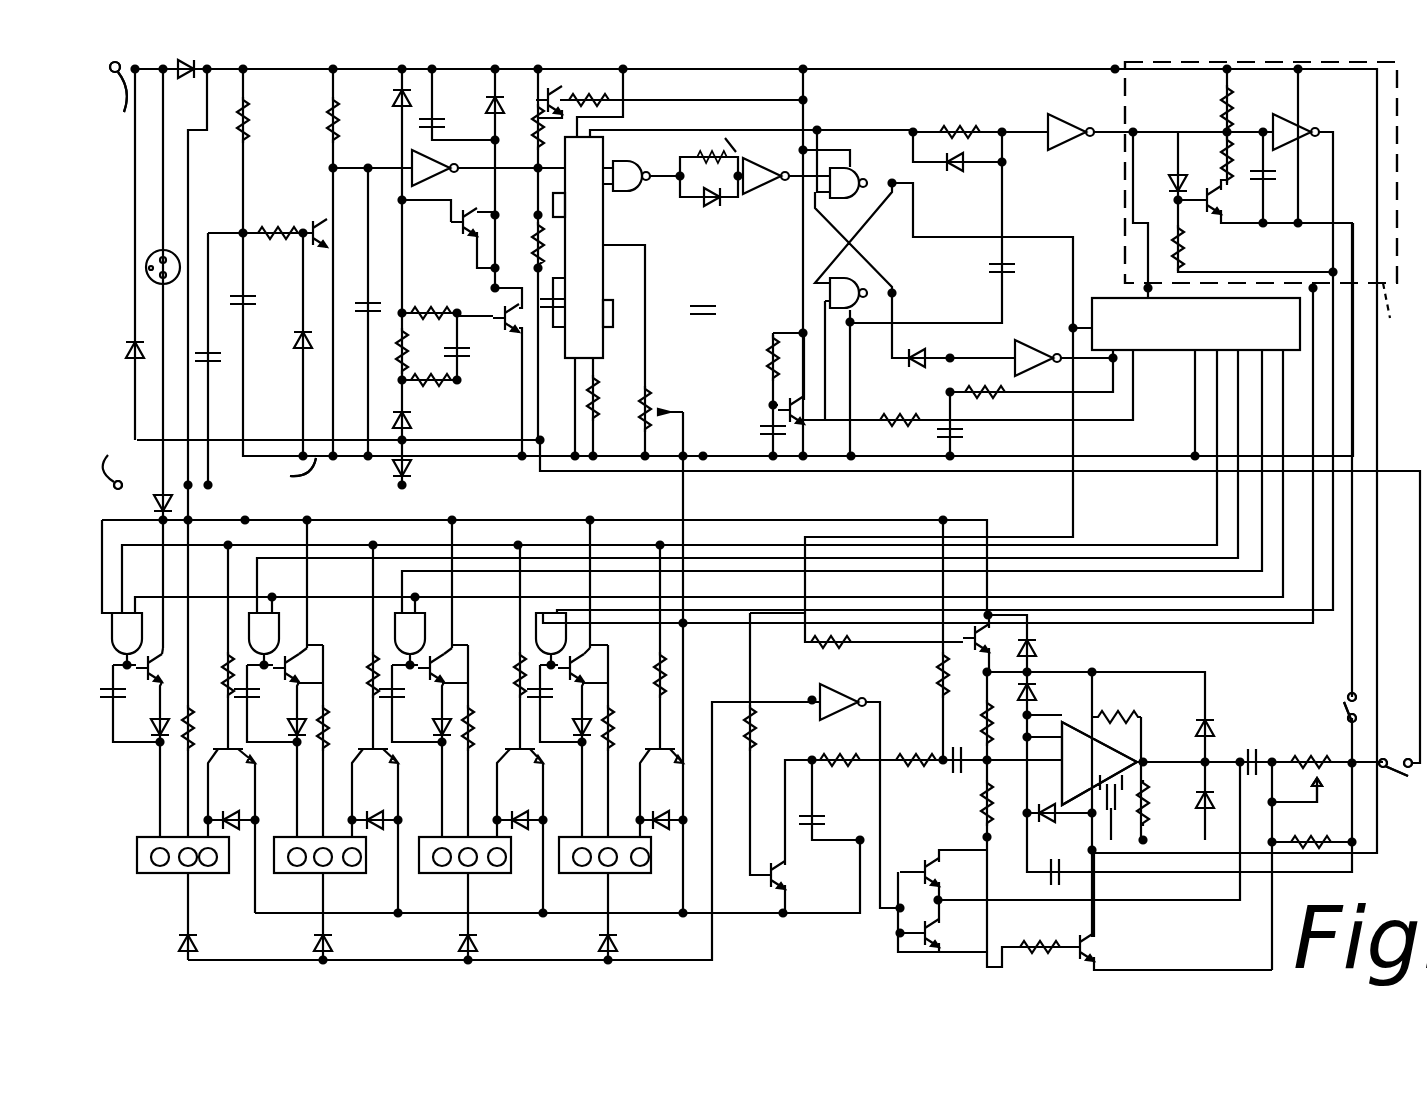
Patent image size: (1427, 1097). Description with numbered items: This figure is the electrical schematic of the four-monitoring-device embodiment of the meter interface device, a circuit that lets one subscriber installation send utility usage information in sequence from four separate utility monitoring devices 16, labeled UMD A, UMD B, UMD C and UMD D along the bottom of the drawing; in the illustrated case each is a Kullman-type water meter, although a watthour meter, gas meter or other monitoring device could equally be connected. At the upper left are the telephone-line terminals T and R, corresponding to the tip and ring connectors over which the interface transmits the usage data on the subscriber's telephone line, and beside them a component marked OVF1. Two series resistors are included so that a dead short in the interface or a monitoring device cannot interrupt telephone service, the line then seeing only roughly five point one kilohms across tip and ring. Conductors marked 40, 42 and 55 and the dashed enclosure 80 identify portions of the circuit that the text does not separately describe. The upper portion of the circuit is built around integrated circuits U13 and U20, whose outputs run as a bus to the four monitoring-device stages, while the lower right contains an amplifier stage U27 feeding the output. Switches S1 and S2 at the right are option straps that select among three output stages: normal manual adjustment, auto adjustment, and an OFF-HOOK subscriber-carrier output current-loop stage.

The common line 40 is at (145, 440).
The terminal T lead 42 is at (110, 107).
The ground line 55 is at (291, 471).
The dashed circuit block 80 is at (1383, 283).
The utility monitoring device 16 is at (148, 834).
The ring connector R is at (117, 473).
The tip connector T is at (111, 85).
The overflow sensor OVF1 is at (132, 267).
The integrated circuit U13 is at (583, 248).
The integrated circuit U20 is at (1196, 325).
The operational amplifier U27 is at (1099, 763).
The option strap switch S1 is at (1332, 707).
The option strap switch S2 is at (1394, 756).